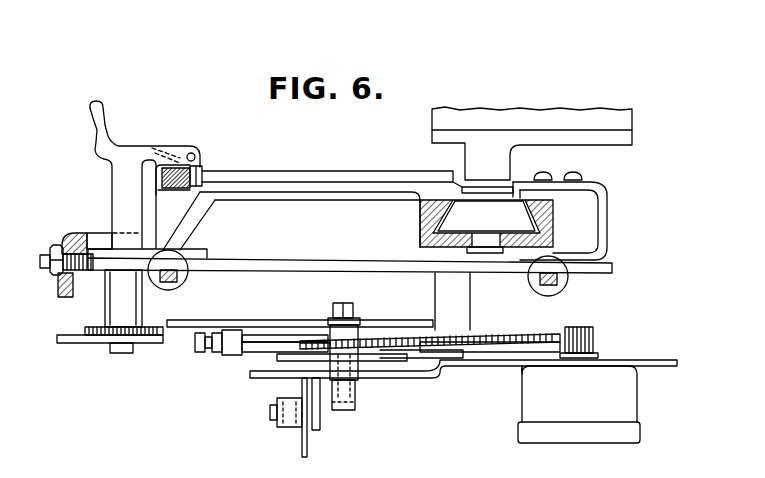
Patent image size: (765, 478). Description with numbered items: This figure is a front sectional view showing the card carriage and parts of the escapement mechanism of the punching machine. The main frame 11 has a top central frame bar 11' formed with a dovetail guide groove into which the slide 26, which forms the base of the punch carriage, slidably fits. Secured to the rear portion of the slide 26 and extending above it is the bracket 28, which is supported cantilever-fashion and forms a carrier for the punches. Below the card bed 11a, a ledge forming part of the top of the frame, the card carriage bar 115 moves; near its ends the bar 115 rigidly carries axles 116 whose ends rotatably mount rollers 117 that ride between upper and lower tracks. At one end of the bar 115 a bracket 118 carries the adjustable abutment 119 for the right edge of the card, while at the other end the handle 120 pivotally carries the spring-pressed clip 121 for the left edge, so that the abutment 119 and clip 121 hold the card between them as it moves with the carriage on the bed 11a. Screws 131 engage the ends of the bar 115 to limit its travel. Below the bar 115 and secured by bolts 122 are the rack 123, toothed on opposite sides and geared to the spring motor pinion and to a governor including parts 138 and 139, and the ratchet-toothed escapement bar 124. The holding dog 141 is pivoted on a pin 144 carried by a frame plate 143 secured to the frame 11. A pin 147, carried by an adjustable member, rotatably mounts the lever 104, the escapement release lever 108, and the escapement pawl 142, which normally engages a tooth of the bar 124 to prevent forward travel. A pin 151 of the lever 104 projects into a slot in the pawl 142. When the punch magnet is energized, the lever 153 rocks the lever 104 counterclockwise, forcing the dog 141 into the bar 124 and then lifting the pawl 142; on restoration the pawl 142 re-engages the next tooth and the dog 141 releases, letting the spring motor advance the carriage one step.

The handle 120 is at (107, 135).
The spring-pressed clip 121 is at (200, 170).
The card bed 11a is at (301, 176).
The top central frame bar 11' is at (358, 221).
The slide 26 is at (455, 210).
The bracket 28 is at (440, 138).
The adjustable abutment 119 is at (587, 178).
The bracket 118 is at (600, 222).
The bar 115 is at (303, 260).
The screws 131 is at (44, 250).
The main frame 11 is at (52, 268).
The bolts 122 is at (113, 305).
The rack 123 is at (85, 340).
The escapement bar 124 is at (100, 346).
The rollers 117 is at (165, 286).
The axles 116 is at (178, 280).
The frame plate 143 is at (236, 321).
The pin 144 is at (267, 328).
The pin 151 is at (355, 325).
The escapement pawl 142 is at (383, 340).
The governor part 138 is at (595, 335).
The lever 104 is at (277, 358).
The escapement release lever 108 is at (250, 374).
The holding dog 141 is at (303, 344).
The pin 147 is at (343, 412).
The lever 153 is at (305, 450).
The governor part 139 is at (578, 441).